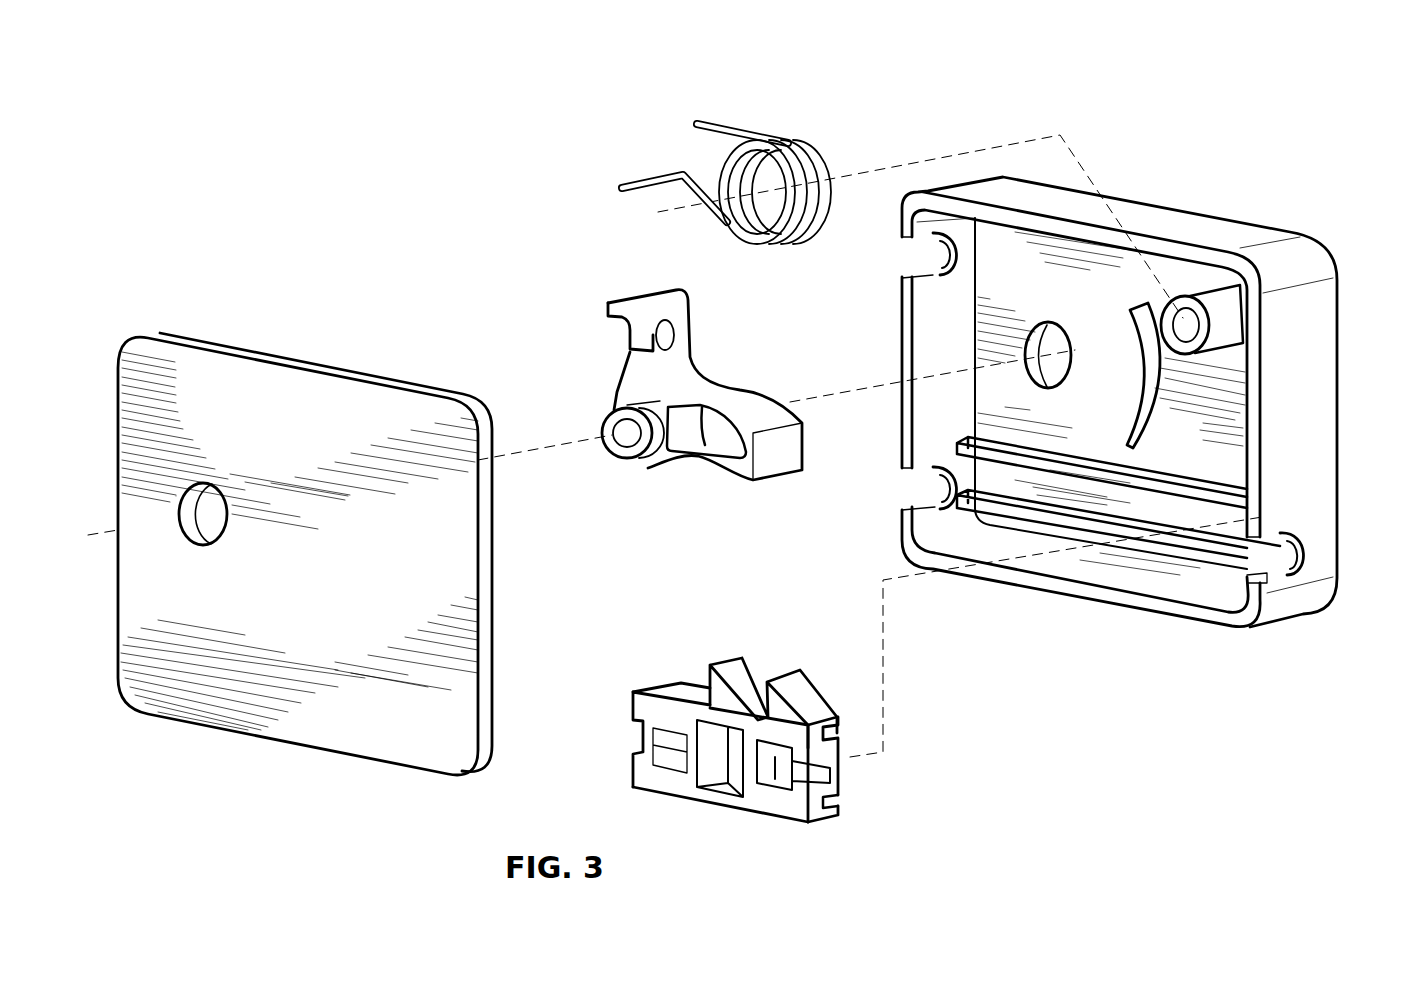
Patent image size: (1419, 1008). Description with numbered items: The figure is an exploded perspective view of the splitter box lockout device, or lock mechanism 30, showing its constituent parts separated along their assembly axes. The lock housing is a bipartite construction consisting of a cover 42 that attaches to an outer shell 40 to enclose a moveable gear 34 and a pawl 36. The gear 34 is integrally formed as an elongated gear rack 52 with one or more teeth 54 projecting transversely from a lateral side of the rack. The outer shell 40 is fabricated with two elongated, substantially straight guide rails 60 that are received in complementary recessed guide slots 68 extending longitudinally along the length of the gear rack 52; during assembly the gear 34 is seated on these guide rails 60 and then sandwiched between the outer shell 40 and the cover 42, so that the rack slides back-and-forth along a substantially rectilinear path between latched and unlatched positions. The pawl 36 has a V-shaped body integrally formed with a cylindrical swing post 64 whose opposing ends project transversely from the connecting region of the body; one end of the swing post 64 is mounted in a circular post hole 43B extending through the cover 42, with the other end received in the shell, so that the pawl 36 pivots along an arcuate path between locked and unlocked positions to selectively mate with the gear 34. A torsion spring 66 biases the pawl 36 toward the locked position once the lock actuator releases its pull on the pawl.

The lock mechanism 30 is at (257, 91).
The cover 42 is at (137, 378).
The post hole 43B is at (192, 507).
The pawl 36 is at (603, 348).
The swing post 64 is at (605, 413).
The torsion spring 66 is at (665, 171).
The outer shell 40 is at (1320, 327).
The guide slots 68 is at (1215, 298).
The guide rails 60 is at (965, 442).
The gear 34 is at (819, 820).
The teeth 54 is at (712, 684).
The gear rack 52 is at (673, 797).